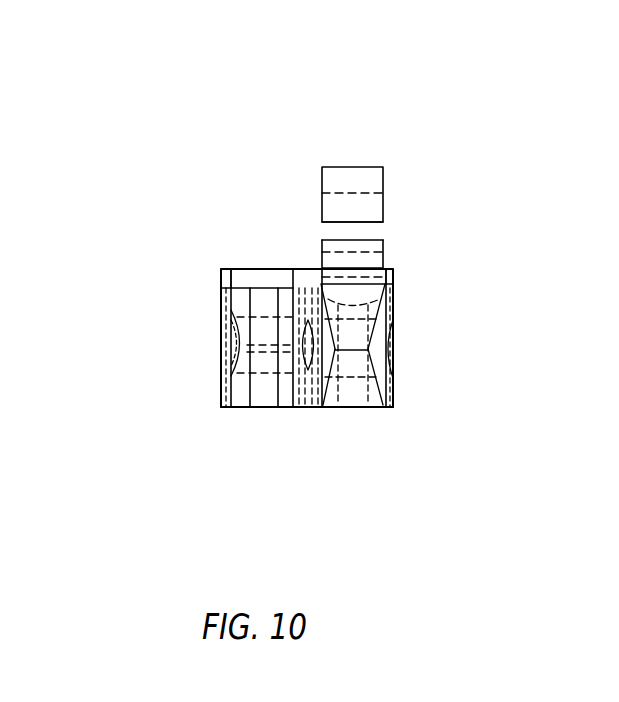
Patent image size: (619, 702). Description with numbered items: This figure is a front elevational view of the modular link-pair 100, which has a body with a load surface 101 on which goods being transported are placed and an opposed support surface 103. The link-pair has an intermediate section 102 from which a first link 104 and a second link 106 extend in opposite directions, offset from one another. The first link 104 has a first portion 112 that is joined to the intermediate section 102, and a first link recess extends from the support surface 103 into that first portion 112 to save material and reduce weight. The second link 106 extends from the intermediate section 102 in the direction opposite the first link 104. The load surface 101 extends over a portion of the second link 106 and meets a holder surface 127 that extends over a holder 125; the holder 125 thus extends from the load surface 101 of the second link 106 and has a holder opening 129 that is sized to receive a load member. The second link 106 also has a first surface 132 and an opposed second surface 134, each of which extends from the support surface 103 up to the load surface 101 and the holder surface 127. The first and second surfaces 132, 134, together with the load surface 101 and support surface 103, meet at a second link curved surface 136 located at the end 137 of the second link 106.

The modular link-pair 100 is at (446, 153).
The load surface 101 is at (273, 268).
The intermediate section 102 is at (306, 269).
The support surface 103 is at (372, 408).
The first link 104 is at (253, 270).
The second link 106 is at (393, 275).
The first portion 112 is at (221, 276).
The holder 125 is at (367, 185).
The holder surface 127 is at (380, 182).
The holder opening 129 is at (396, 214).
The first surface 132 is at (395, 292).
The second surface 134 is at (320, 407).
The second link curved surface 136 is at (369, 344).
The end 137 is at (368, 350).